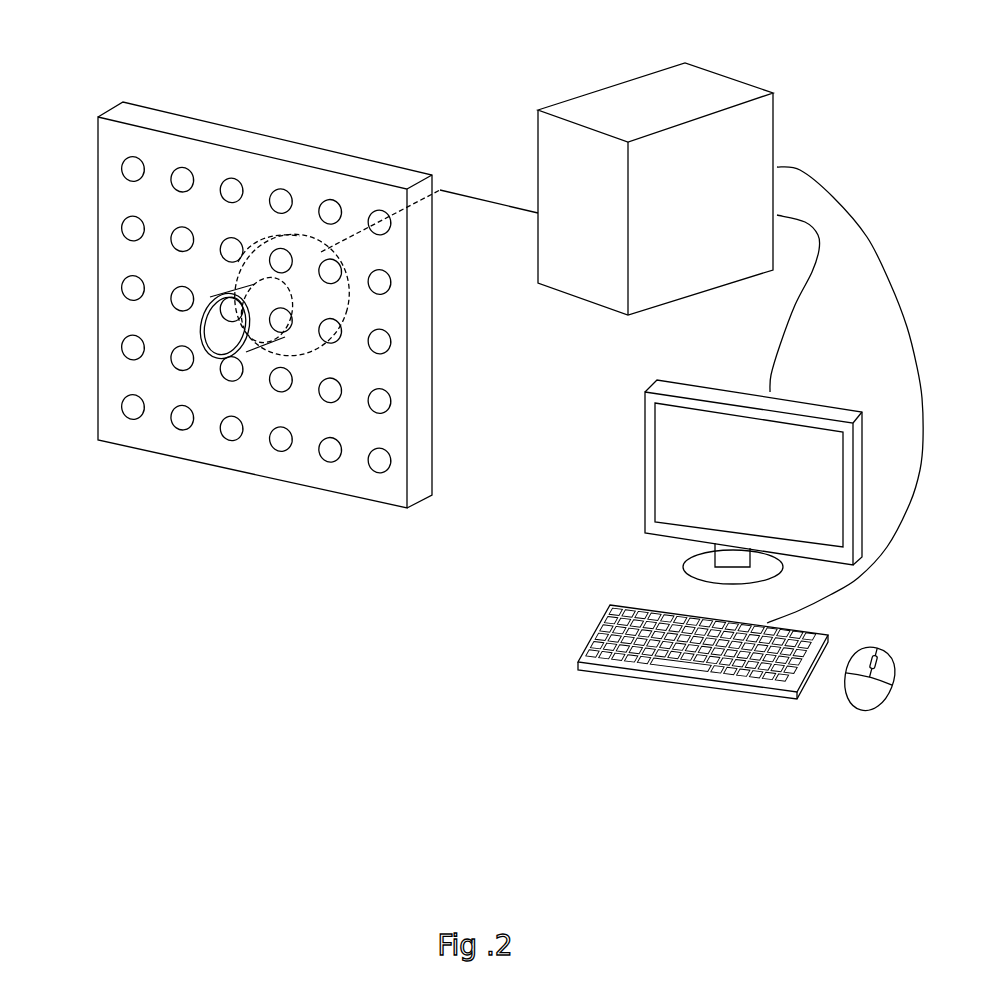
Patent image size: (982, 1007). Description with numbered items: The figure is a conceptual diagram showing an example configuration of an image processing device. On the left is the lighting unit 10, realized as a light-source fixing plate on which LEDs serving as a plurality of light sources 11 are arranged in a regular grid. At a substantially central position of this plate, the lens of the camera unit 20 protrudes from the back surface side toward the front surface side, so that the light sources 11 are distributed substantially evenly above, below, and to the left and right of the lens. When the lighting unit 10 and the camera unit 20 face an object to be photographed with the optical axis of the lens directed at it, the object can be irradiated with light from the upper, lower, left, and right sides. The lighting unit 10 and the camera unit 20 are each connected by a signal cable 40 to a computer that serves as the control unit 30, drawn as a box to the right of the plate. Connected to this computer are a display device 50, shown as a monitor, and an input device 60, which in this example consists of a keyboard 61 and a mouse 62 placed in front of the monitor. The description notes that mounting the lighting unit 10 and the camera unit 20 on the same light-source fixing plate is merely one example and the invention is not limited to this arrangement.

The lighting unit 10 is at (135, 115).
The light sources 11 is at (130, 230).
The camera unit 20 is at (215, 322).
The control unit 30 is at (607, 107).
The signal cable 40 is at (455, 188).
The display device 50 is at (643, 433).
The input device 60 is at (739, 717).
The keyboard 61 is at (752, 690).
The mouse 62 is at (858, 712).